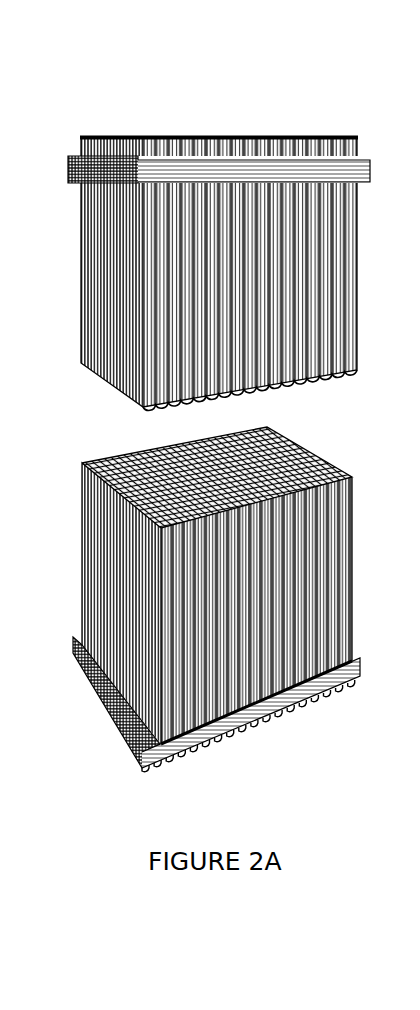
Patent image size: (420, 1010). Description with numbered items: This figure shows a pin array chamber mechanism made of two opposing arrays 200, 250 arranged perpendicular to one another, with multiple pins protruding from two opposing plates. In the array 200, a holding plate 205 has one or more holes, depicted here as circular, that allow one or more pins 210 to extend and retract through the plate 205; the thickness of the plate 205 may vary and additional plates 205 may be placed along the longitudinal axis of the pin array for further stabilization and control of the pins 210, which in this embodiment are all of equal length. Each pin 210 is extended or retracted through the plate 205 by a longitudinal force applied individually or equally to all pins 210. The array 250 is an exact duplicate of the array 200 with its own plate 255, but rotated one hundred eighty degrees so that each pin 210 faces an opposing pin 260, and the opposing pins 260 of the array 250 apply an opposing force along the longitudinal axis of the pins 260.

The array 200 is at (197, 212).
The holding plate 205 is at (228, 170).
The pin 210 is at (200, 328).
The array 250 is at (192, 606).
The plate 255 is at (228, 715).
The opposing pin 260 is at (200, 597).